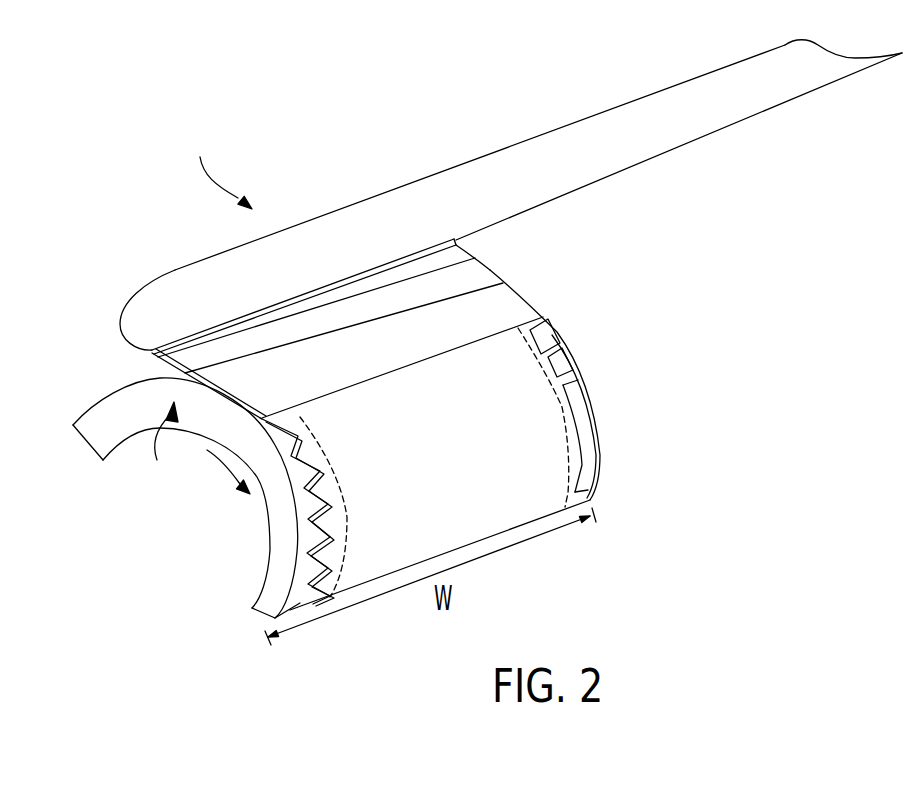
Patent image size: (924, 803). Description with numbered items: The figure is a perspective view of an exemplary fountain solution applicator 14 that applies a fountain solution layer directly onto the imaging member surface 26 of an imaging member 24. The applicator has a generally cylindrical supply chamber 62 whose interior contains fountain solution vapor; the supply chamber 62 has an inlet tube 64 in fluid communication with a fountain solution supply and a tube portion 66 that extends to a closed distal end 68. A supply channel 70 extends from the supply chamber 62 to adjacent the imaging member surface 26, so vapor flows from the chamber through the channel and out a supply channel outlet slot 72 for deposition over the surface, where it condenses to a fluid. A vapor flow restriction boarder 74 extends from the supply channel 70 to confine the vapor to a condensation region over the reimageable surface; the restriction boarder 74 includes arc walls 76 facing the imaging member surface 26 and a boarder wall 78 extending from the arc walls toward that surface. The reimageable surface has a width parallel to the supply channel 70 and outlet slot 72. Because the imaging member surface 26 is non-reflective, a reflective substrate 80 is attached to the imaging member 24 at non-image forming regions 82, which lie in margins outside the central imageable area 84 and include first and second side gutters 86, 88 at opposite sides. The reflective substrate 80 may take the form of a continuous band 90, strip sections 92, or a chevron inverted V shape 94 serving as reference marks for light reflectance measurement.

The fountain solution applicator 14 is at (218, 166).
The imaging member 24 is at (270, 558).
The imaging member surface 26 is at (555, 380).
The supply chamber 62 is at (530, 136).
The inlet tube 64 is at (792, 103).
The tube portion 66 is at (385, 191).
The closed distal end 68 is at (140, 300).
The supply channel 70 is at (148, 350).
The supply channel outlet slot 72 is at (162, 448).
The vapor flow restriction boarder 74 is at (497, 275).
The arc walls 76 is at (537, 297).
The boarder wall 78 is at (150, 378).
The reflective substrate 80 is at (550, 328).
The non-image forming regions 82 is at (595, 482).
The imageable area 84 is at (416, 386).
The first side gutter 86 is at (308, 517).
The second side gutter 88 is at (586, 390).
The continuous band 90 is at (585, 463).
The strip sections 92 is at (546, 360).
The chevron inverted V shape 94 is at (252, 608).